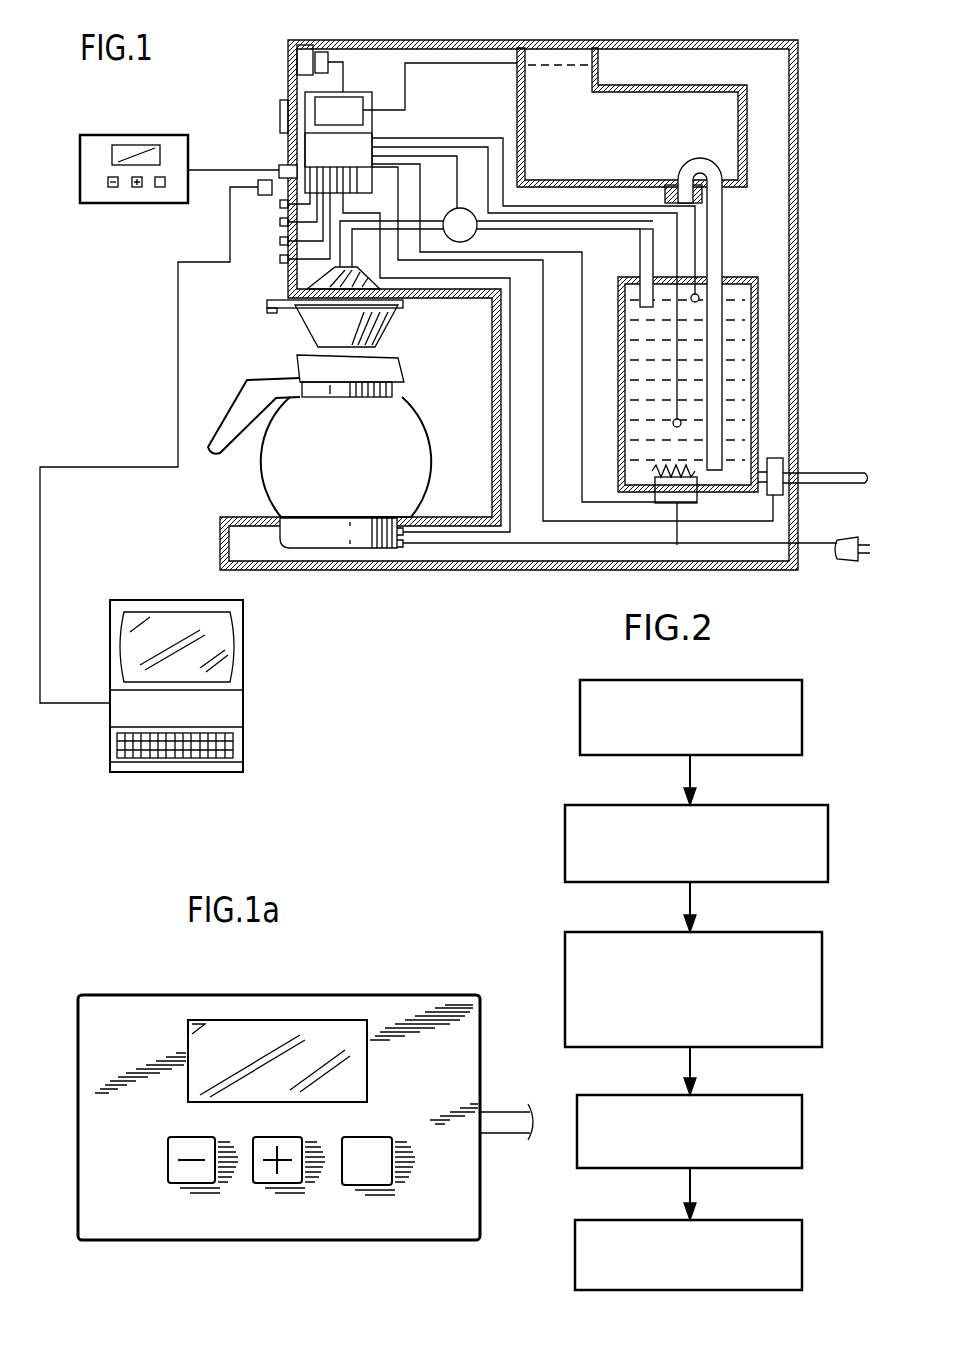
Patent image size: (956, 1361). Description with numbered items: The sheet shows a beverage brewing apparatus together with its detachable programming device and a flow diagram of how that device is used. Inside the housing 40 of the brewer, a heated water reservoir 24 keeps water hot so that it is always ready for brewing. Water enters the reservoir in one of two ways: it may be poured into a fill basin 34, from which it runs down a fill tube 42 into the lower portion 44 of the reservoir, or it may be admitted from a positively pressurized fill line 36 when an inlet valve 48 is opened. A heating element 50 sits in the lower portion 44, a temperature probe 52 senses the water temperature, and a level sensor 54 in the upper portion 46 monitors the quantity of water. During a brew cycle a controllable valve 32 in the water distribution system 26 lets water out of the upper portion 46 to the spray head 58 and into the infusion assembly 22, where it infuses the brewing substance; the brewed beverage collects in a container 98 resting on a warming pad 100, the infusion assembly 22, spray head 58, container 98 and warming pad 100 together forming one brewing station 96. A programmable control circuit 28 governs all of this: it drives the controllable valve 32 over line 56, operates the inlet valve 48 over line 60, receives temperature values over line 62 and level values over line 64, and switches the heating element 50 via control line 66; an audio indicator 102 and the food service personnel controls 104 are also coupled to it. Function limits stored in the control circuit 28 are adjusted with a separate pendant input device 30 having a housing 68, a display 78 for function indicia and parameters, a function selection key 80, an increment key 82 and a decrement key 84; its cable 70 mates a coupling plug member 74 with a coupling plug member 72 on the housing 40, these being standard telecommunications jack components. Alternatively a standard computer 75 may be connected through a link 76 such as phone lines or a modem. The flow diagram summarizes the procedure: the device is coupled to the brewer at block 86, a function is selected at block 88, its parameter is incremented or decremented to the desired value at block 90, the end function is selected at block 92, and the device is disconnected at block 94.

In FIG. 1, the infusion assembly 22 is at (297, 325).
In FIG. 1, the heated water reservoir 24 is at (766, 332).
In FIG. 1, the water distribution system 26 is at (604, 230).
In FIG. 1, the control circuit 28 is at (290, 92).
In FIG. 1, the input device 30 is at (153, 179).
In FIG. 1A, the input device 30 is at (270, 1100).
In FIG. 1, the controllable valve 32 is at (462, 243).
In FIG. 1, the fill basin 34 is at (640, 85).
In FIG. 1, the fill line 36 is at (812, 472).
In FIG. 1, the housing 40 is at (800, 120).
In FIG. 1, the fill tube 42 is at (715, 370).
In FIG. 1, the lower portion 44 is at (643, 460).
In FIG. 1, the upper portion 46 is at (618, 318).
In FIG. 1, the inlet valve 48 is at (785, 468).
In FIG. 1, the heating element 50 is at (678, 470).
In FIG. 1, the temperature probe 52 is at (673, 425).
In FIG. 1, the level sensor 54 is at (700, 298).
In FIG. 1, the line 56 is at (458, 165).
In FIG. 1, the spray head 58 is at (383, 335).
In FIG. 1, the line 60 is at (398, 175).
In FIG. 1, the line 62 is at (485, 150).
In FIG. 1, the line 64 is at (503, 150).
In FIG. 1, the control line 66 is at (421, 195).
In FIG. 1, the housing 68 is at (100, 205).
In FIG. 1A, the housing 68 is at (148, 995).
In FIG. 1, the cable 70 is at (218, 173).
In FIG. 1A, the cable 70 is at (500, 1112).
In FIG. 1, the coupling plug member 72 is at (283, 162).
In FIG. 1, the coupling plug member 74 is at (280, 168).
In FIG. 1, the computer 75 is at (243, 685).
In FIG. 1, the link 76 is at (97, 466).
In FIG. 1, the display 78 is at (122, 150).
In FIG. 1A, the display 78 is at (300, 1020).
In FIG. 1, the function selection key 80 is at (162, 190).
In FIG. 1A, the function selection key 80 is at (370, 1187).
In FIG. 1, the increment key 82 is at (137, 190).
In FIG. 1A, the increment key 82 is at (275, 1185).
In FIG. 1, the decrement key 84 is at (100, 185).
In FIG. 1A, the decrement key 84 is at (190, 1185).
In FIG. 2, the block 86 is at (580, 712).
In FIG. 2, the block 88 is at (565, 832).
In FIG. 2, the block 90 is at (565, 975).
In FIG. 2, the block 92 is at (577, 1110).
In FIG. 2, the block 94 is at (575, 1270).
In FIG. 1, the brewing station 96 is at (325, 436).
In FIG. 1, the container 98 is at (414, 452).
In FIG. 1, the warming pad 100 is at (343, 532).
In FIG. 1, the audio indicator 102 is at (297, 55).
In FIG. 1, the controls 104 is at (280, 107).